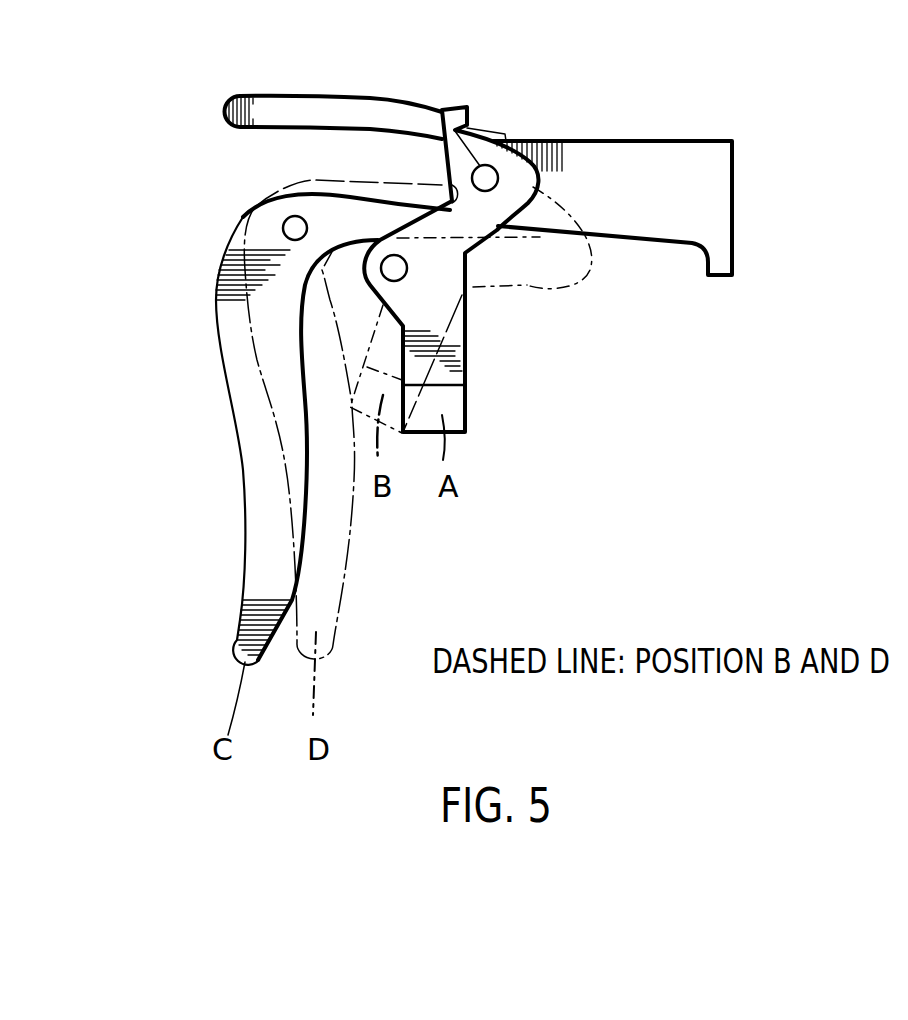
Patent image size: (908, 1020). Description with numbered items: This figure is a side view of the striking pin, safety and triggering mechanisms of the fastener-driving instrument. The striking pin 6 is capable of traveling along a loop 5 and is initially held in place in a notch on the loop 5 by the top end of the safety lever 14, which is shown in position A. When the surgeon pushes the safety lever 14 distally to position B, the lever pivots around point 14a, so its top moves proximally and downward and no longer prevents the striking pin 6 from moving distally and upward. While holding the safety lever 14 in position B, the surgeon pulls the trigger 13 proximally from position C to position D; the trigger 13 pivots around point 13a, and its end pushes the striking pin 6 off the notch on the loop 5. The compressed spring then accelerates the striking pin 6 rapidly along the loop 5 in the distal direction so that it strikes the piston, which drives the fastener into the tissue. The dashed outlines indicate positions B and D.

The loop 5 is at (318, 107).
The striking pin 6 is at (722, 193).
The trigger 13 is at (278, 467).
The pivot point of trigger 13a is at (283, 228).
The safety lever 14 is at (478, 223).
The pivot point of safety lever 14a is at (398, 271).